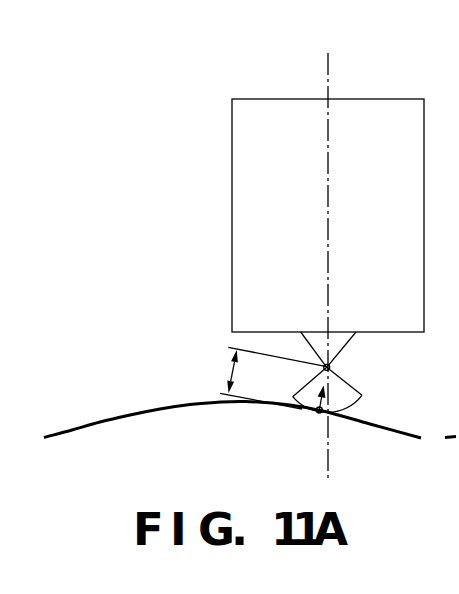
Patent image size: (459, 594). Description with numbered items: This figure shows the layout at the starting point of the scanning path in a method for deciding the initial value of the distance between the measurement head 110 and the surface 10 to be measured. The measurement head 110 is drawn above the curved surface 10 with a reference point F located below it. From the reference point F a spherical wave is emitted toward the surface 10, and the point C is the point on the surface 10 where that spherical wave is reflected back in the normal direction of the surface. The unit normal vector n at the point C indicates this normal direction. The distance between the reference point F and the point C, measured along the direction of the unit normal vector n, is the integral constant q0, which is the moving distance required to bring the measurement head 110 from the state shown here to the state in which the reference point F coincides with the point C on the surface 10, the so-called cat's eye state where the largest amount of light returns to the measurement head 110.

The surface to be measured 10 is at (102, 420).
The measurement head 110 is at (245, 189).
The reference point F is at (327, 372).
The point on the surface C is at (316, 423).
The unit normal vector n is at (333, 382).
The integral constant q0 is at (263, 378).